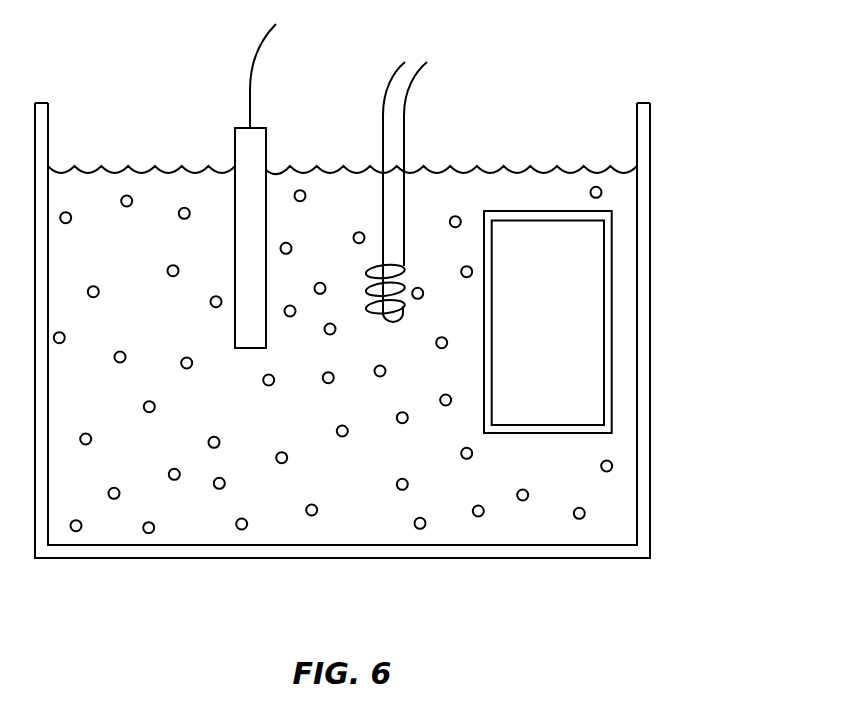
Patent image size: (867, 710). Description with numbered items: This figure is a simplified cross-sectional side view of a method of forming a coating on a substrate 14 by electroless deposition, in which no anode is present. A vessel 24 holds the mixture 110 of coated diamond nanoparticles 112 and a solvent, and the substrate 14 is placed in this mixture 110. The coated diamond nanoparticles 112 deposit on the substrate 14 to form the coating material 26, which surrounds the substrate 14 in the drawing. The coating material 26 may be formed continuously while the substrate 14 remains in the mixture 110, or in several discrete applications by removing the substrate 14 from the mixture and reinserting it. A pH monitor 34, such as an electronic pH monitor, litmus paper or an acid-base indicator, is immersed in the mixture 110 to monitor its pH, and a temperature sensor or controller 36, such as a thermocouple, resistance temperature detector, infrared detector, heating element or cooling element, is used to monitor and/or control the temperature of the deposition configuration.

The tank 24 is at (643, 137).
The mixture 110 is at (182, 521).
The coated diamond nanoparticles 112 is at (612, 464).
The pH monitor 34 is at (236, 148).
The temperature sensor or controller 36 is at (405, 158).
The coating material 26 is at (612, 408).
The substrate 14 is at (577, 344).